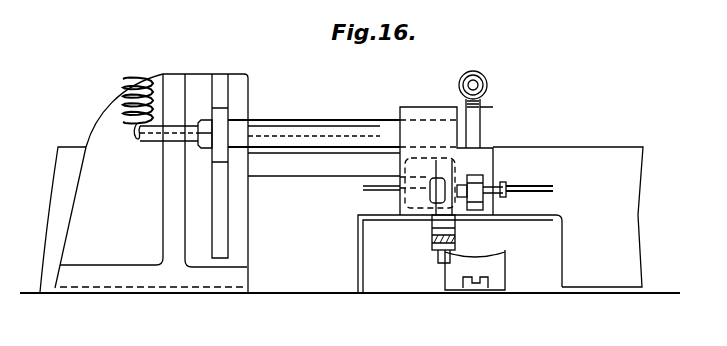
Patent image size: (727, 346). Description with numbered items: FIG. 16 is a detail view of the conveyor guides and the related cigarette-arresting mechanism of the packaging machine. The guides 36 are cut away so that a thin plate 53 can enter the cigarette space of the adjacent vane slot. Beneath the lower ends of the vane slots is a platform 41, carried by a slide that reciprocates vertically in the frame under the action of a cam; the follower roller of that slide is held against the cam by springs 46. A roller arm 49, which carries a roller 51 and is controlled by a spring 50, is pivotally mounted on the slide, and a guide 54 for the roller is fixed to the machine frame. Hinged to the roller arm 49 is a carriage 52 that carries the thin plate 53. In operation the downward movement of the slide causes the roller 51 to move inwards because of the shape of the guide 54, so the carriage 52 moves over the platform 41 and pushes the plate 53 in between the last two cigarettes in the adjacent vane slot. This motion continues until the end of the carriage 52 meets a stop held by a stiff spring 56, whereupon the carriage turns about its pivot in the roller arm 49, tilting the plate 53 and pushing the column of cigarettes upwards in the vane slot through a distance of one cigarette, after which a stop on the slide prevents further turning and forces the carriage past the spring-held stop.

The guides 36 is at (632, 217).
The platform 41 is at (377, 220).
The springs 46 is at (138, 80).
The roller arm 49 is at (466, 108).
The spring 50 is at (488, 87).
The roller 51 is at (462, 186).
The carriage 52 is at (504, 179).
The thin plate 53 is at (552, 187).
The guide 54 is at (496, 288).
The stiff spring 56 is at (427, 260).